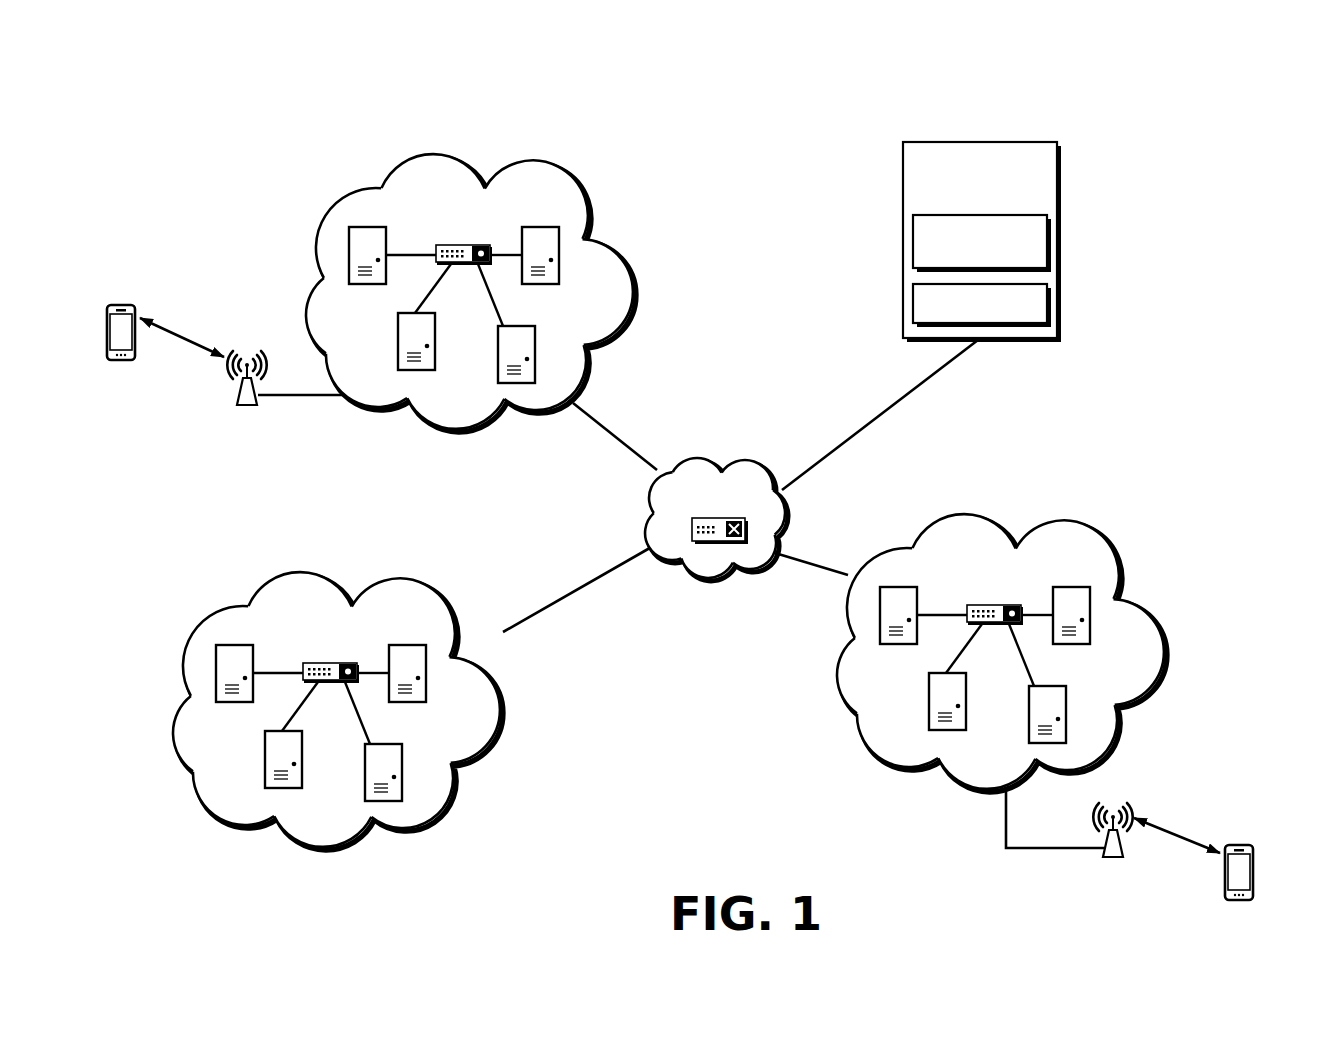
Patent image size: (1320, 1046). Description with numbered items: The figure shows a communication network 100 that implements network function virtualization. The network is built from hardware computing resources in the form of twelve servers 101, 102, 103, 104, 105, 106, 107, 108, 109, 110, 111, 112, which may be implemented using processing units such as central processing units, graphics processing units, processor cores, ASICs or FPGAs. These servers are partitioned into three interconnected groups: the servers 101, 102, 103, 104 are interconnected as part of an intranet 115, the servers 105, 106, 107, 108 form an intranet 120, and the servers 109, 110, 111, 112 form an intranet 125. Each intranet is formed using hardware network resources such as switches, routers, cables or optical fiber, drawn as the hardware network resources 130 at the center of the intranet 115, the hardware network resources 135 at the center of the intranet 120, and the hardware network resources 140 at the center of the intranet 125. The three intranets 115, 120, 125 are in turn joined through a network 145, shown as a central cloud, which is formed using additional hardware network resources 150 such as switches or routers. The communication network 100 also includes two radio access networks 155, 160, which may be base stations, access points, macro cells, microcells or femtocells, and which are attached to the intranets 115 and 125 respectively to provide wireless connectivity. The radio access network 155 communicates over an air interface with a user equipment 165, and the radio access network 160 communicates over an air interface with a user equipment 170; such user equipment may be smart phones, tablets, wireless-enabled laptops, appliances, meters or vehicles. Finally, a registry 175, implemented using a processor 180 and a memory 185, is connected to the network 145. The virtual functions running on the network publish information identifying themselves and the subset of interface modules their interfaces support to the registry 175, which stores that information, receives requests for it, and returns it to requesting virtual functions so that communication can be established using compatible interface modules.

The communication network 100 is at (1208, 142).
The server 101 is at (349, 258).
The server 102 is at (398, 343).
The server 103 is at (536, 350).
The server 104 is at (560, 265).
The server 105 is at (216, 676).
The server 106 is at (265, 760).
The server 107 is at (400, 767).
The server 108 is at (426, 682).
The server 109 is at (880, 628).
The server 110 is at (929, 714).
The server 111 is at (1066, 713).
The server 112 is at (1090, 626).
The intranet 115 is at (418, 150).
The intranet 120 is at (283, 568).
The intranet 125 is at (950, 510).
The hardware network resources 130 is at (466, 246).
The hardware network resources 135 is at (333, 663).
The hardware network resources 140 is at (995, 605).
The network 145 is at (692, 458).
The additional hardware network resources 150 is at (736, 518).
The radio access network 155 is at (248, 407).
The radio access network 160 is at (1113, 860).
The user equipment 165 is at (135, 310).
The user equipment 170 is at (1238, 902).
The registry 175 is at (903, 167).
The processor 180 is at (913, 301).
The memory 185 is at (913, 243).